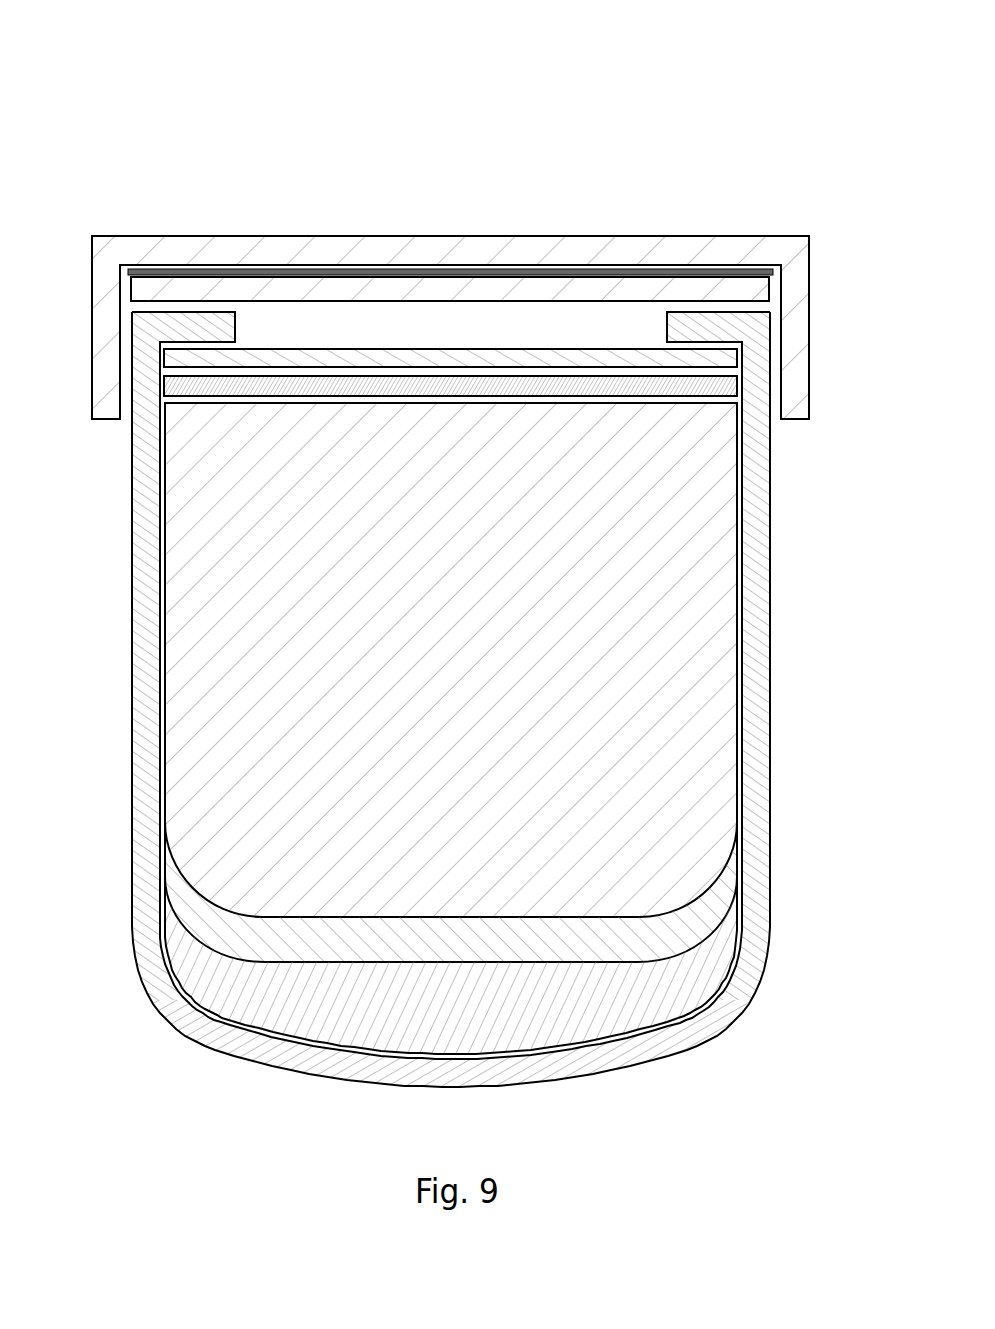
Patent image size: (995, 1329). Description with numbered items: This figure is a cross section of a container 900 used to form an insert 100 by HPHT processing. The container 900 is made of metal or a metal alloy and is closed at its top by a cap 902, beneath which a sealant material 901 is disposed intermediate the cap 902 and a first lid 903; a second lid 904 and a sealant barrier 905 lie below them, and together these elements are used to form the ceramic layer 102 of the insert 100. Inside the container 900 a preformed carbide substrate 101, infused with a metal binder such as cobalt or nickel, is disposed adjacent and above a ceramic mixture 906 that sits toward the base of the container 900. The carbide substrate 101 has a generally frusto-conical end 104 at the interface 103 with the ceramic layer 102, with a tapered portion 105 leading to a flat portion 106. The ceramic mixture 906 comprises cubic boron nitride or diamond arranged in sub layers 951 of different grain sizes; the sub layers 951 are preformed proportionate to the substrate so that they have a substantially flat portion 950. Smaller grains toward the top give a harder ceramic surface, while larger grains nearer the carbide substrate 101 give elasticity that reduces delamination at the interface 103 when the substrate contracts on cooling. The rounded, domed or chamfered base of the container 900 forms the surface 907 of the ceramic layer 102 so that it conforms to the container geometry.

The container 900 is at (443, 580).
The sealant material 901 is at (722, 270).
The cap 902 is at (665, 253).
The first lid 903 is at (600, 290).
The second lid 904 is at (517, 360).
The sealant barrier 905 is at (262, 390).
The insert 100 is at (416, 699).
The carbide substrate 101 is at (505, 781).
The ceramic layer 102 is at (693, 901).
The interface 103 is at (737, 817).
The frusto-conical end 104 is at (737, 980).
The tapered portion 105 is at (737, 907).
The flat portion 106 is at (428, 917).
The flat portion 950 is at (448, 881).
The sub layers 951 is at (220, 923).
The ceramic mixture 906 is at (181, 981).
The surface 907 is at (510, 1045).